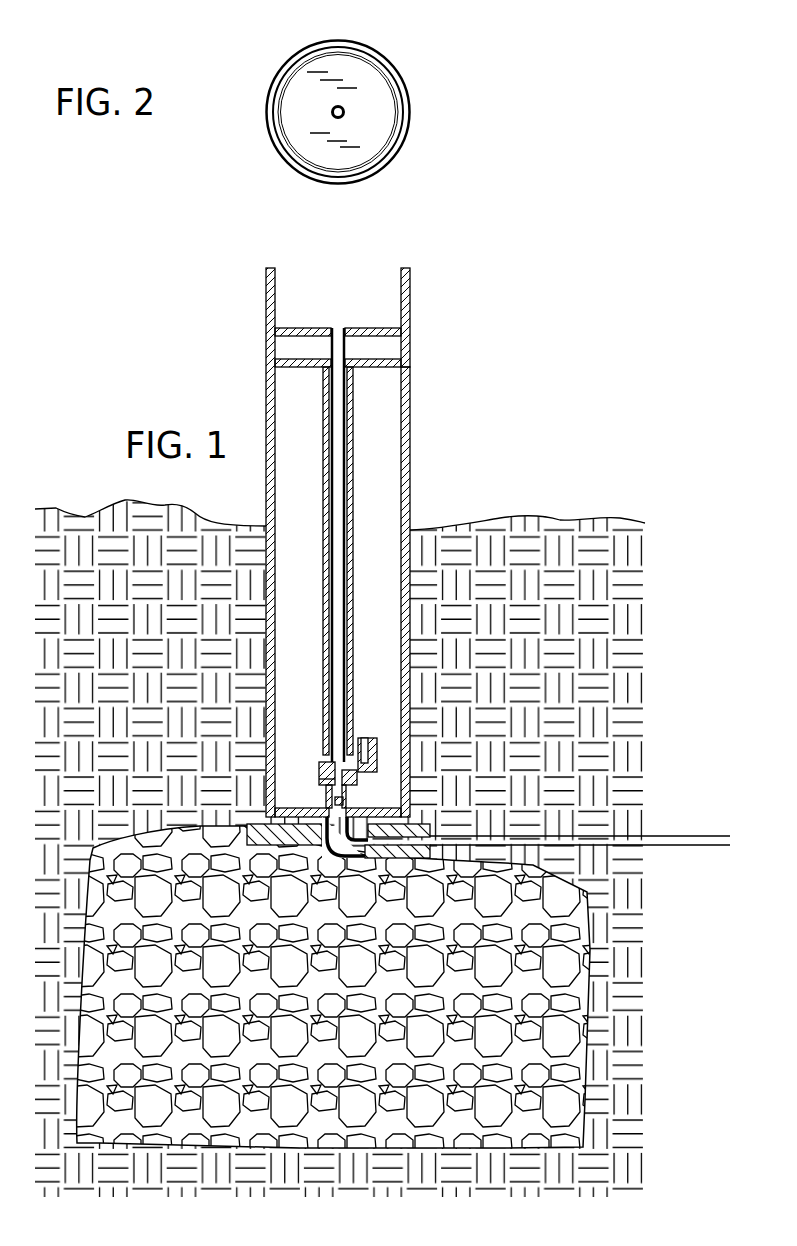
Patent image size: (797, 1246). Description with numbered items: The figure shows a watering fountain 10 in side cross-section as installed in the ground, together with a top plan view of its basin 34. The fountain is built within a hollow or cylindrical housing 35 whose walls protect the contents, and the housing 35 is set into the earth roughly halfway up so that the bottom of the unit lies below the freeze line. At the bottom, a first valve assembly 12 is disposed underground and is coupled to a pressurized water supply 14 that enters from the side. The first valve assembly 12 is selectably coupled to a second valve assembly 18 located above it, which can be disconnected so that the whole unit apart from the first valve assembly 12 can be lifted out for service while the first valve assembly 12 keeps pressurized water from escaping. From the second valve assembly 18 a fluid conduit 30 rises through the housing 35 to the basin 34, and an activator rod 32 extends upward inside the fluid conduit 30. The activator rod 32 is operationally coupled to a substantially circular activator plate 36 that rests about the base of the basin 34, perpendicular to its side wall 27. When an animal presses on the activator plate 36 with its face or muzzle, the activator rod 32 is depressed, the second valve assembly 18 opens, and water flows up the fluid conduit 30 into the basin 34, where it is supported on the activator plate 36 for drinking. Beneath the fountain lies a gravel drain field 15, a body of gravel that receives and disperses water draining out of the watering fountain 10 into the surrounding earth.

In FIG. 1, the watering fountain 10 is at (401, 512).
In FIG. 1, the first valve assembly 12 is at (378, 803).
In FIG. 1, the pressurized water supply 14 is at (690, 848).
In FIG. 1, the gravel drain field 15 is at (300, 1005).
In FIG. 1, the second valve assembly 18 is at (320, 770).
In FIG. 1, the side wall 27 is at (410, 297).
In FIG. 2, the fluid conduit 30 is at (346, 108).
In FIG. 1, the fluid conduit 30 is at (346, 618).
In FIG. 2, the activator rod 32 is at (331, 109).
In FIG. 1, the activator rod 32 is at (345, 350).
In FIG. 2, the basin 34 is at (428, 120).
In FIG. 1, the basin 34 is at (240, 316).
In FIG. 1, the housing 35 is at (410, 453).
In FIG. 2, the activator plate 36 is at (297, 111).
In FIG. 1, the activator plate 36 is at (372, 328).